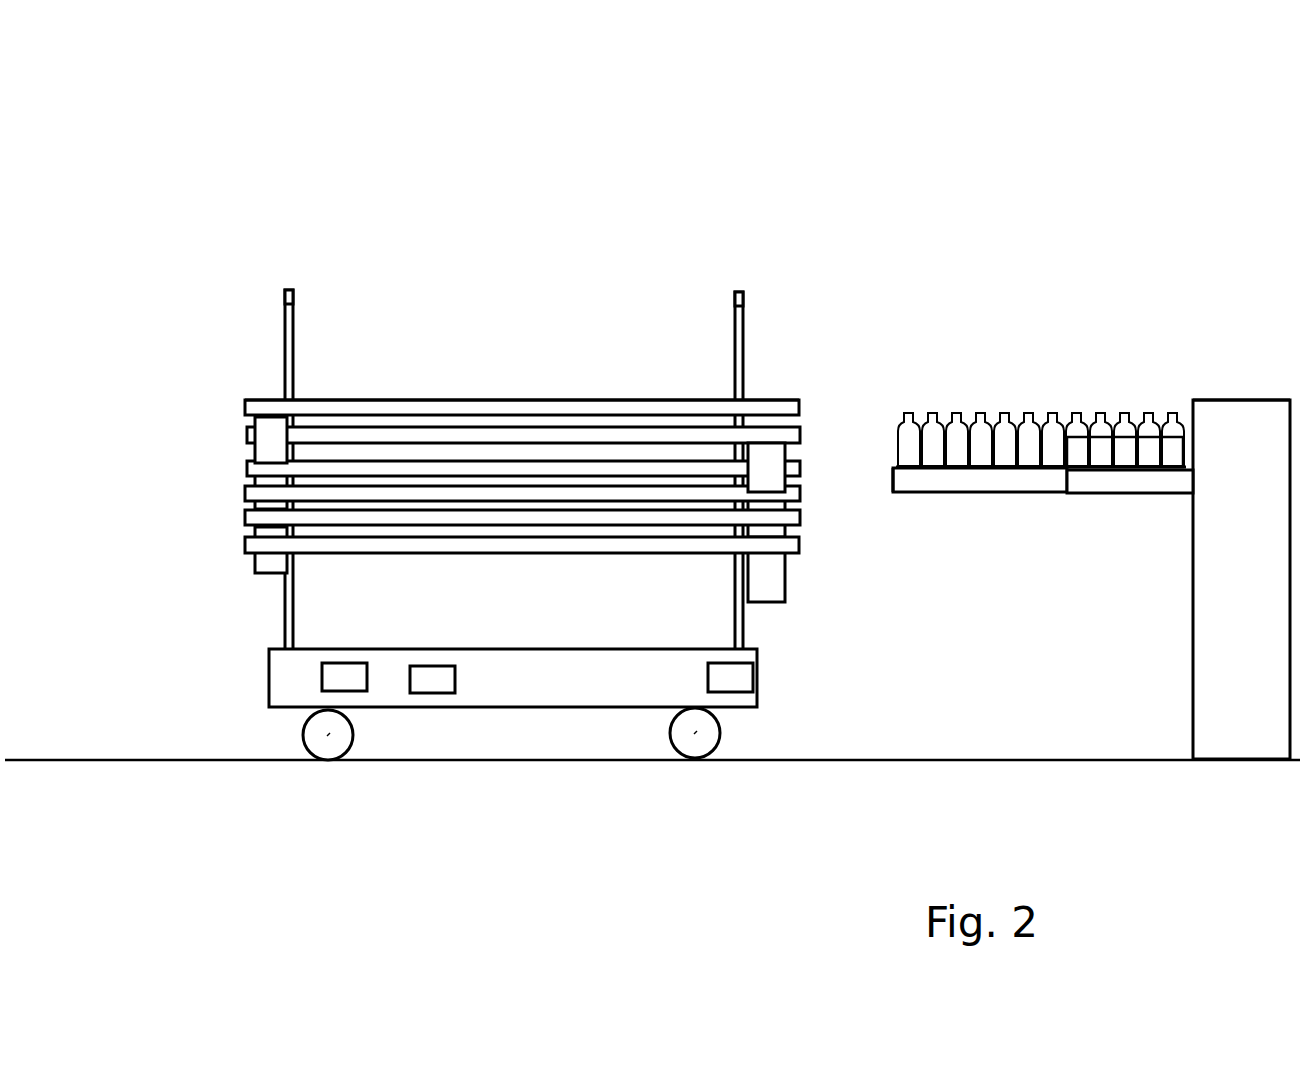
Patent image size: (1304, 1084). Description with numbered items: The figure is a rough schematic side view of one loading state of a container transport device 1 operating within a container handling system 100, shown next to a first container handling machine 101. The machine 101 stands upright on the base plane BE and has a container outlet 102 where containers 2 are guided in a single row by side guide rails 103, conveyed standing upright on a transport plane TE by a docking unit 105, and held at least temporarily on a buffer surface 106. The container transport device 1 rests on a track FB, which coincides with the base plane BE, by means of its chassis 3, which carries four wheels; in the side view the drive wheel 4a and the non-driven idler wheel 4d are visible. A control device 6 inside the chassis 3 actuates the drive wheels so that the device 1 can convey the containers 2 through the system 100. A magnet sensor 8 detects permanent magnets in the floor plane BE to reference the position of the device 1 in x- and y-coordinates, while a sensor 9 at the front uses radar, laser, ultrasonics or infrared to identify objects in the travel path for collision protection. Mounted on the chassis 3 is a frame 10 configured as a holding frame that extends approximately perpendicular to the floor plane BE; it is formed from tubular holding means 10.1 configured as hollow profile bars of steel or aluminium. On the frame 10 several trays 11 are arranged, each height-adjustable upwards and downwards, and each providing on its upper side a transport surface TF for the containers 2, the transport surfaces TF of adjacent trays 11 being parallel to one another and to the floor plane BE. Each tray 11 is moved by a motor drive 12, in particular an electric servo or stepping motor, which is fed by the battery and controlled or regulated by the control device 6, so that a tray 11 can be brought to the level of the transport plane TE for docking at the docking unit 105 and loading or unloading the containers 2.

The container transport device 1 is at (638, 285).
The containers 2 is at (907, 418).
The chassis 3 is at (262, 679).
The wheel 4a is at (701, 765).
The wheel 4d is at (327, 764).
The control device 6 is at (438, 682).
The magnet sensor 8 is at (337, 680).
The sensor 9 is at (728, 679).
The frame 10 is at (273, 330).
The holding means 10.1 is at (292, 290).
The tray 11 is at (238, 403).
The motor drive 12 is at (778, 608).
The container handling system 100 is at (1095, 148).
The container handling machine 101 is at (1262, 579).
The container outlet 102 is at (1137, 503).
The side guide rails 103 is at (1106, 443).
The docking unit 105 is at (985, 503).
The buffer surface 106 is at (1158, 402).
The transport surface TF is at (505, 396).
The transport plane TE is at (891, 466).
The base plane BE is at (925, 757).
The track FB is at (1047, 757).